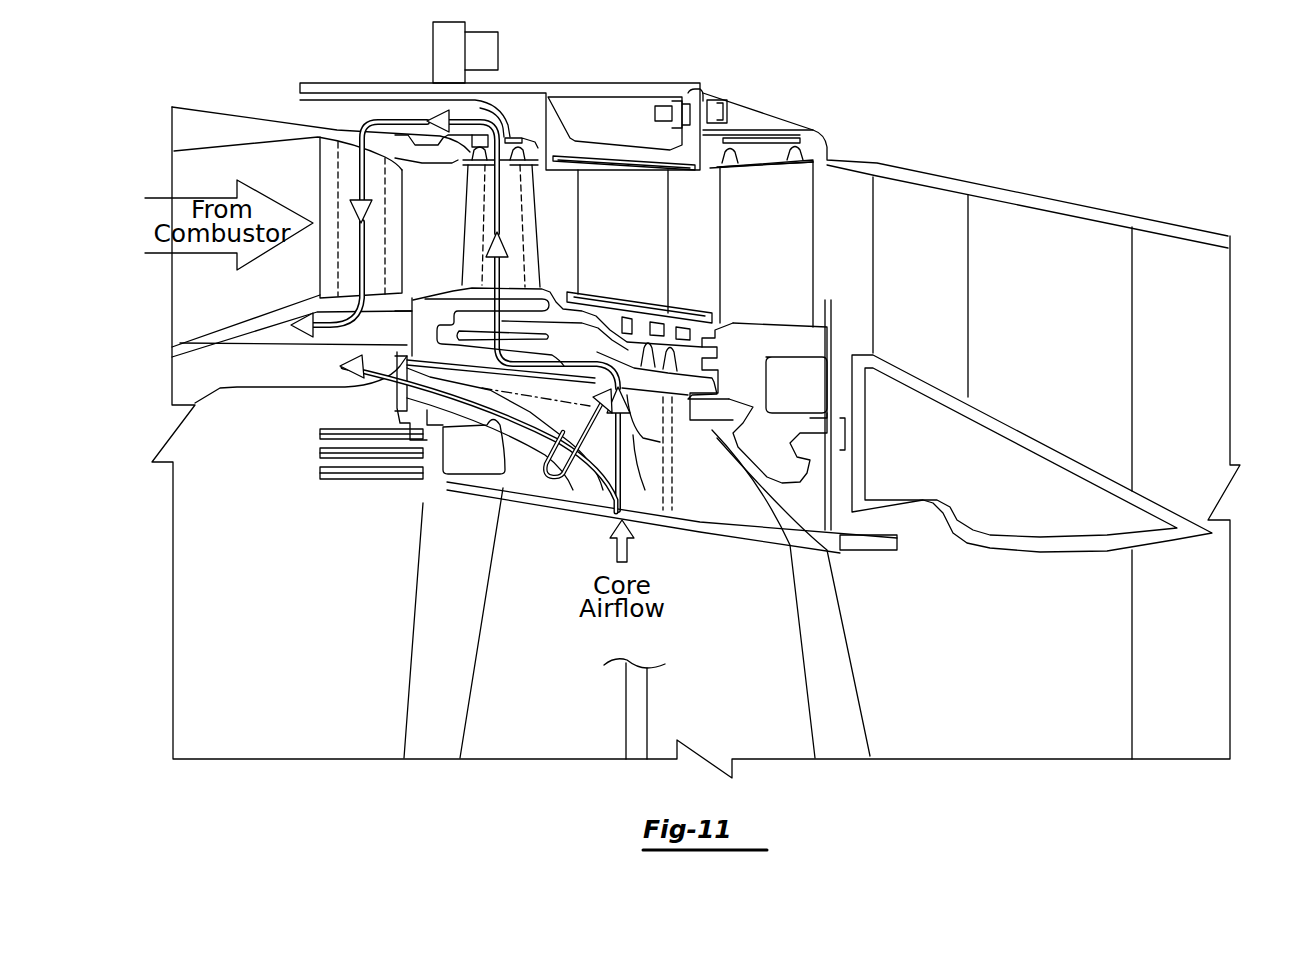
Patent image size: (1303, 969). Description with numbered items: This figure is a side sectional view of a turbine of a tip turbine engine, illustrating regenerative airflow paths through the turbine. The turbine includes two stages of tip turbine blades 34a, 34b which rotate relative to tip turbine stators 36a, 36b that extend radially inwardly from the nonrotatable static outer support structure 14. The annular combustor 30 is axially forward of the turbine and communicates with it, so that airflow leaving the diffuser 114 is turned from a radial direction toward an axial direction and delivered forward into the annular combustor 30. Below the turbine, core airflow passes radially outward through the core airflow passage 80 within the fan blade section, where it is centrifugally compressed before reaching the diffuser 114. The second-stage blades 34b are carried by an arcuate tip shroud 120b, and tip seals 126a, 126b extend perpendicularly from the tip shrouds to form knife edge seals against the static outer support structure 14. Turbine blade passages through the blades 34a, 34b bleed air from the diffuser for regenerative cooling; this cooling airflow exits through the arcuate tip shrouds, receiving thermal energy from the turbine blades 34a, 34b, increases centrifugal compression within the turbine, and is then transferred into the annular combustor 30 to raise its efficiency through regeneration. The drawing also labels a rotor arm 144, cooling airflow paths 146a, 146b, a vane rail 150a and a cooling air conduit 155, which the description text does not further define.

The static outer support structure 14 is at (627, 90).
The annular combustor 30 is at (232, 312).
The turbine blade 34a is at (474, 224).
The turbine blade 34b is at (784, 291).
The tip turbine stator 36a is at (328, 180).
The tip turbine stator 36b is at (642, 233).
The core airflow passage 80 is at (750, 651).
The diffuser 114 is at (442, 472).
The arcuate tip shroud 120b is at (737, 168).
The tip seal 126a is at (477, 135).
The tip seal 126b is at (738, 148).
The rotor arm 144 is at (498, 430).
The cooling air flow 146a is at (640, 443).
The cooling air flow 146b is at (600, 467).
The vane rail 150a is at (540, 258).
The cooling air conduit 155 is at (433, 103).